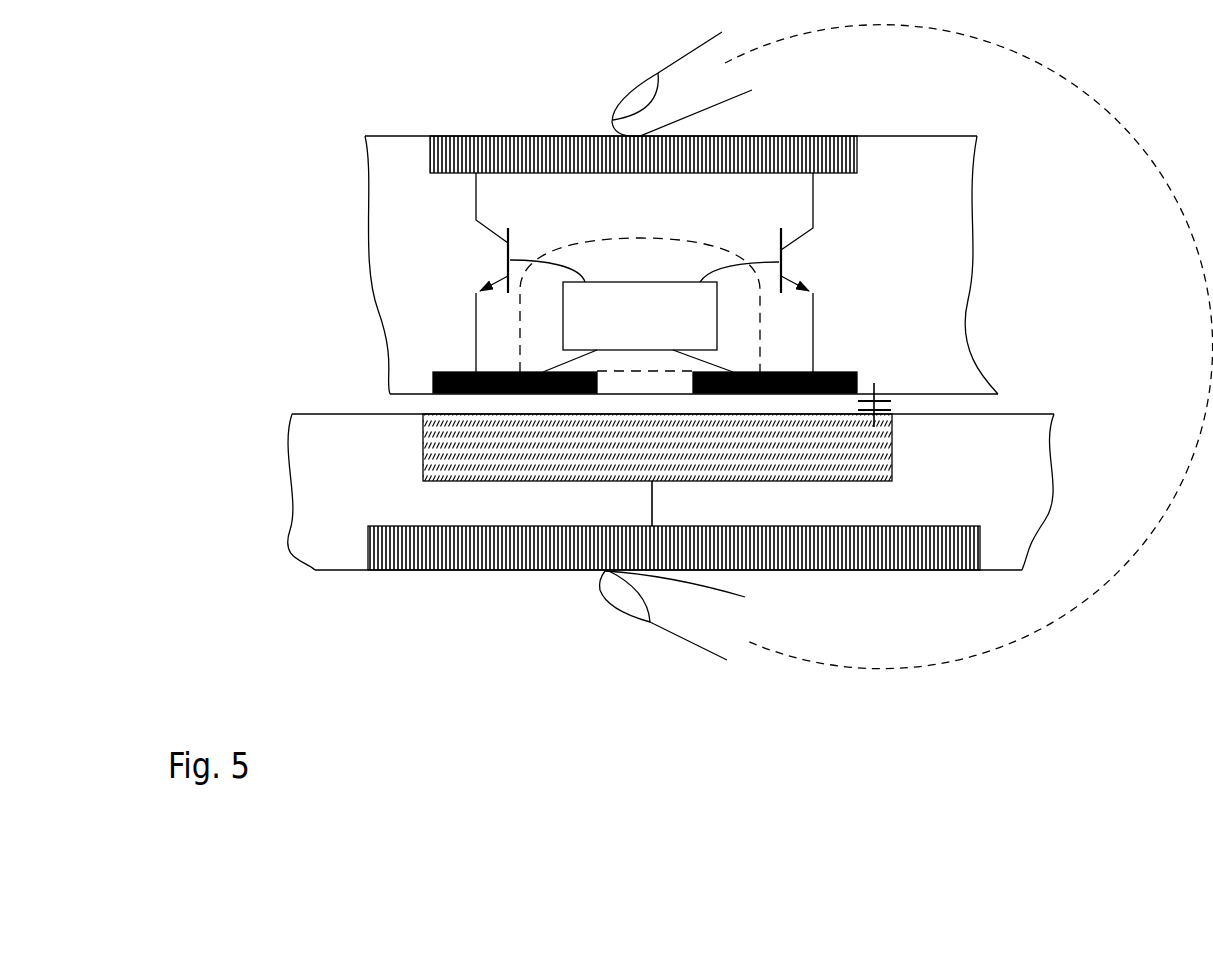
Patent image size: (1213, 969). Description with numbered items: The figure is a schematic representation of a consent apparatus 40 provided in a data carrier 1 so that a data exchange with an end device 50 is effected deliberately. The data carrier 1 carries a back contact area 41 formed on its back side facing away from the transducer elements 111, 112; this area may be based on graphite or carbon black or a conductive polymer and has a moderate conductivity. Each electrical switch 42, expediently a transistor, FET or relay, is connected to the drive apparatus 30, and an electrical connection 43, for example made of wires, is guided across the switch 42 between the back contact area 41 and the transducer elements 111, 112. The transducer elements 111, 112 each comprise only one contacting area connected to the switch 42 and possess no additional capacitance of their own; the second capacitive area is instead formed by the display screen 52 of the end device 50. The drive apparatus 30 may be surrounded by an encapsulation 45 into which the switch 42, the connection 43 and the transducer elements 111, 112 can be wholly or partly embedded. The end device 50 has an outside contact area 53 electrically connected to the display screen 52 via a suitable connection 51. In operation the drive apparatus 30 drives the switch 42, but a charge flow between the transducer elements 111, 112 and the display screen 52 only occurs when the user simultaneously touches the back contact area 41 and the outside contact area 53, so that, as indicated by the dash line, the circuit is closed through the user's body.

The data carrier 1 is at (945, 192).
The drive apparatus 30 is at (657, 335).
The consent apparatus 40 is at (496, 258).
The back contact area 41 is at (517, 136).
The electrical switch 42 is at (783, 262).
The electrical connection 43 is at (480, 217).
The encapsulation 45 is at (683, 238).
The end device 50 is at (1017, 488).
The connection 51 is at (653, 516).
The display screen 52 is at (420, 436).
The outside contact area 53 is at (434, 573).
The transducer element 111 is at (432, 378).
The transducer element 112 is at (838, 371).